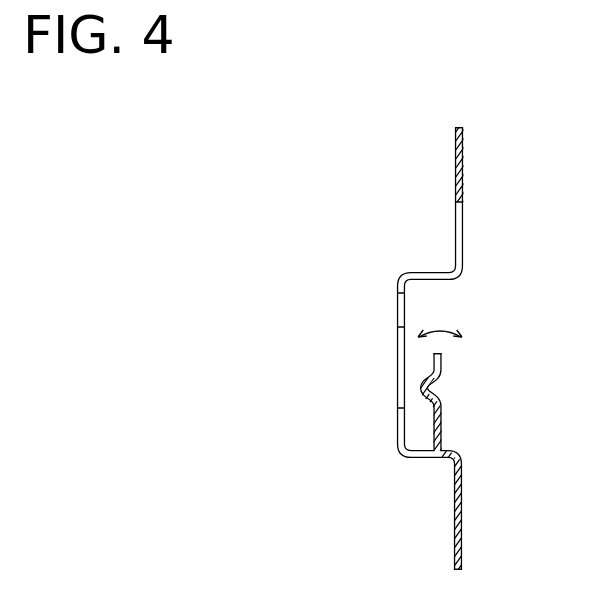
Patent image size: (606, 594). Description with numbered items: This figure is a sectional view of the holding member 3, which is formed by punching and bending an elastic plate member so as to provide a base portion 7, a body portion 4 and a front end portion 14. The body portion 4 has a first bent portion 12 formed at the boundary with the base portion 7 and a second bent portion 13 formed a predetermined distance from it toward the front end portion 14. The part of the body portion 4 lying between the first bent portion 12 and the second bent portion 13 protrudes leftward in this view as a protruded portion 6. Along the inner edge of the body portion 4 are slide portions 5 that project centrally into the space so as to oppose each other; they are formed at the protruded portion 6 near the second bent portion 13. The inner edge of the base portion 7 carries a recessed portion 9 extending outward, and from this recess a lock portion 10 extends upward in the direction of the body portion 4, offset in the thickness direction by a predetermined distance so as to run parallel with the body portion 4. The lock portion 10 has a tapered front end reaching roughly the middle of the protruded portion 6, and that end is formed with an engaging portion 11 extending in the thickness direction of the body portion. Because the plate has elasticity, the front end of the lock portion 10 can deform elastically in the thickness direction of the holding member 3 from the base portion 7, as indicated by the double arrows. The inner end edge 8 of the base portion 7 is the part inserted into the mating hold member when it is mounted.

The holding member 3 is at (398, 113).
The body portion 4 is at (396, 340).
The slide portions 5 is at (396, 310).
The protruded portion 6 is at (396, 368).
The base portion 7 is at (463, 525).
The inner end edge 8 is at (396, 410).
The recessed portion 9 is at (400, 458).
The lock portion 10 is at (442, 425).
The engaging portion 11 is at (443, 386).
The first bent portion 12 is at (435, 462).
The second bent portion 13 is at (422, 273).
The front end portion 14 is at (464, 182).